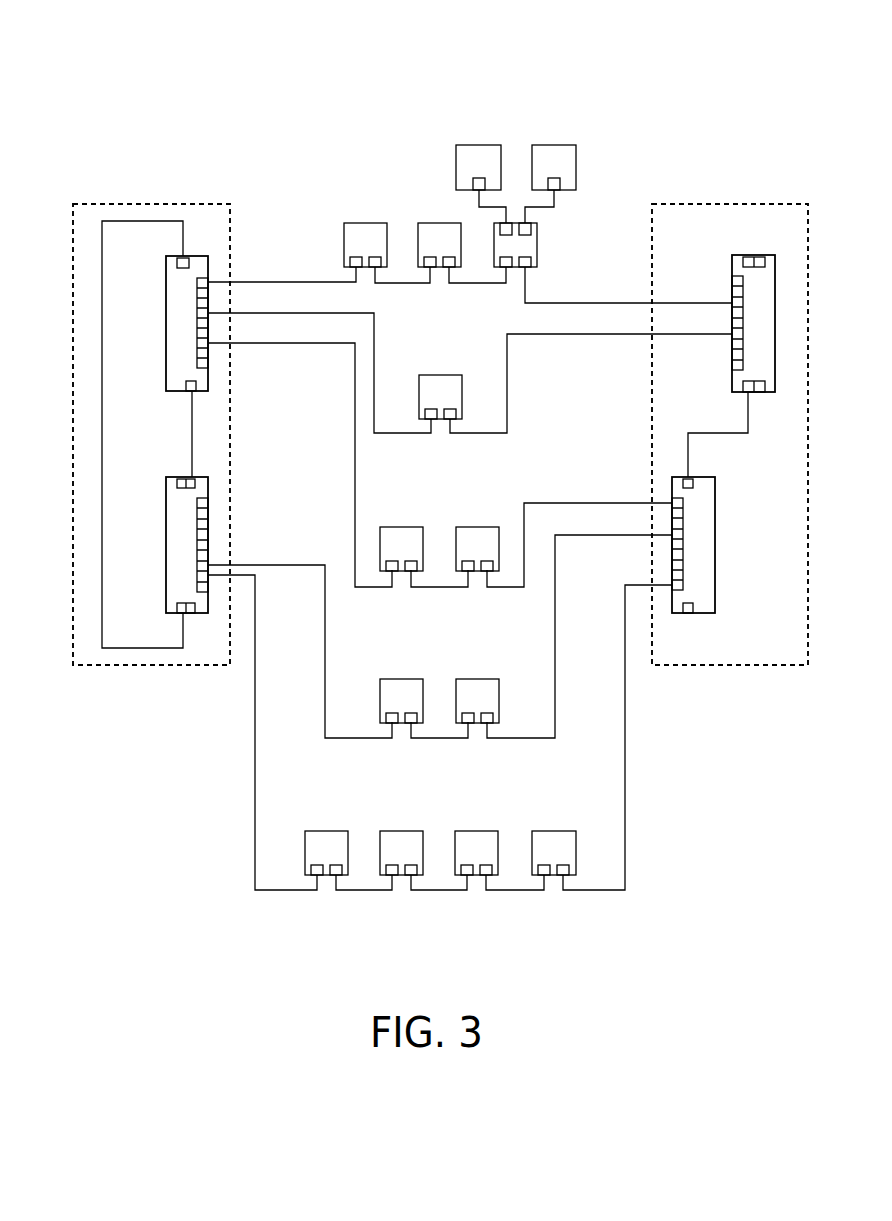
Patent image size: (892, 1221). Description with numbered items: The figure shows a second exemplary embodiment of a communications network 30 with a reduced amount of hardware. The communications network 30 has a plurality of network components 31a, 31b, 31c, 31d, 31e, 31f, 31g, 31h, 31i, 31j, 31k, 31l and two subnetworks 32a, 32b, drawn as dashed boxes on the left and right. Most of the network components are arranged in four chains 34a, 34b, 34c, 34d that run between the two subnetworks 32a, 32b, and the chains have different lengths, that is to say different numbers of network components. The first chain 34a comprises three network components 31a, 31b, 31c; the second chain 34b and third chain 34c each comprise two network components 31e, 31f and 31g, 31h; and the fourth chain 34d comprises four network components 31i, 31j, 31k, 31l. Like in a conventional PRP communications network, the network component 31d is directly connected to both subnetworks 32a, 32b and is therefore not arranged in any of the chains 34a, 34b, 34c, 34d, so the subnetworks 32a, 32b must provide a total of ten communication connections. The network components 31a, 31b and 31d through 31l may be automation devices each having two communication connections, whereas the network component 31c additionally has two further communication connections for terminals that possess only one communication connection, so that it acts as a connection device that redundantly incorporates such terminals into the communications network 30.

The communications network 30 is at (469, 112).
The network component 31a is at (358, 222).
The network component 31b is at (423, 222).
The network component 31c is at (512, 268).
The network component 31d is at (437, 373).
The network component 31e is at (403, 526).
The network component 31f is at (478, 526).
The network component 31g is at (401, 678).
The network component 31h is at (477, 678).
The network component 31i is at (321, 830).
The network component 31j is at (397, 830).
The network component 31k is at (475, 830).
The network component 31l is at (553, 830).
The subnetwork 32a is at (141, 666).
The subnetwork 32b is at (737, 666).
The first chain 34a is at (562, 250).
The second chain 34b is at (537, 519).
The third chain 34c is at (532, 698).
The fourth chain 34d is at (598, 858).